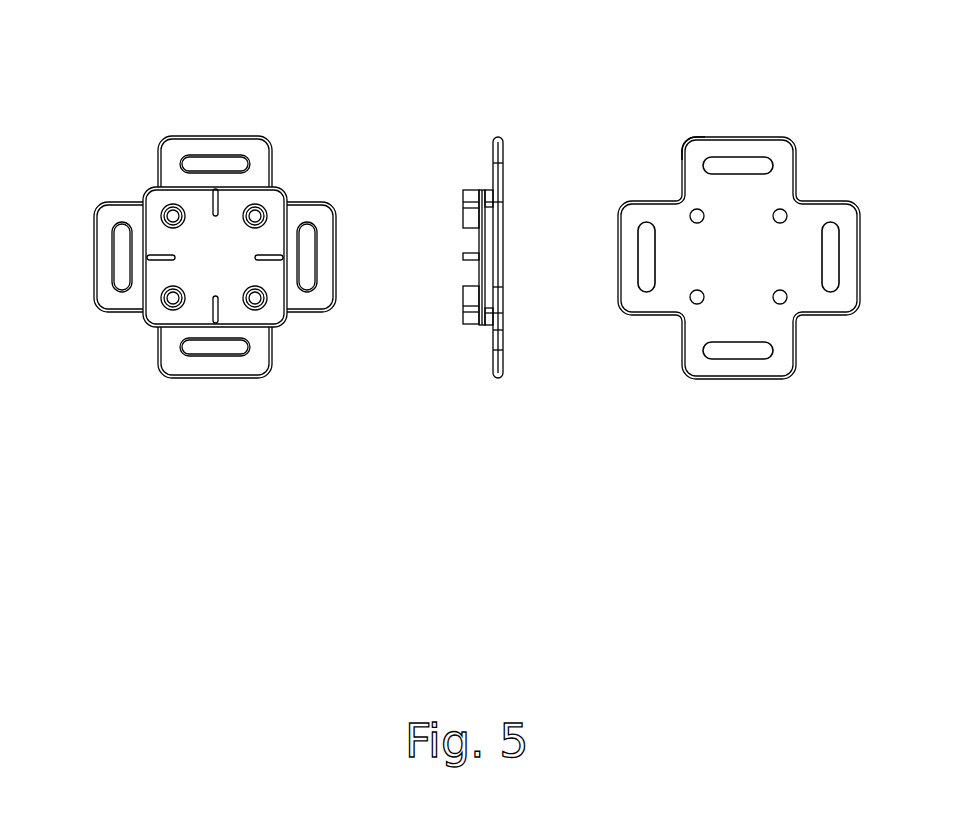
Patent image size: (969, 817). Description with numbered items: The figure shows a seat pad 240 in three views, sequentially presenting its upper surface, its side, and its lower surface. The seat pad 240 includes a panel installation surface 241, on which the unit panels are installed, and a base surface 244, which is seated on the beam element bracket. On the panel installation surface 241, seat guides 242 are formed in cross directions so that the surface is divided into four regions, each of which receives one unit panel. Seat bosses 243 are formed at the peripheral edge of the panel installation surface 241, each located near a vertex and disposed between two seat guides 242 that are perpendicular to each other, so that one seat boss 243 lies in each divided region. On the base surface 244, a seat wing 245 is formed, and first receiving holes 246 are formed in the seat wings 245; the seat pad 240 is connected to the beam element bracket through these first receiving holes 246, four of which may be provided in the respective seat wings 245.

The seat pad 240 is at (841, 45).
The panel installation surface 241 is at (155, 275).
The seat guide 242 is at (164, 250).
The seat boss 243 is at (172, 198).
The base surface 244 is at (502, 257).
The seat wing 245 is at (703, 135).
The first receiving hole 246 is at (738, 155).